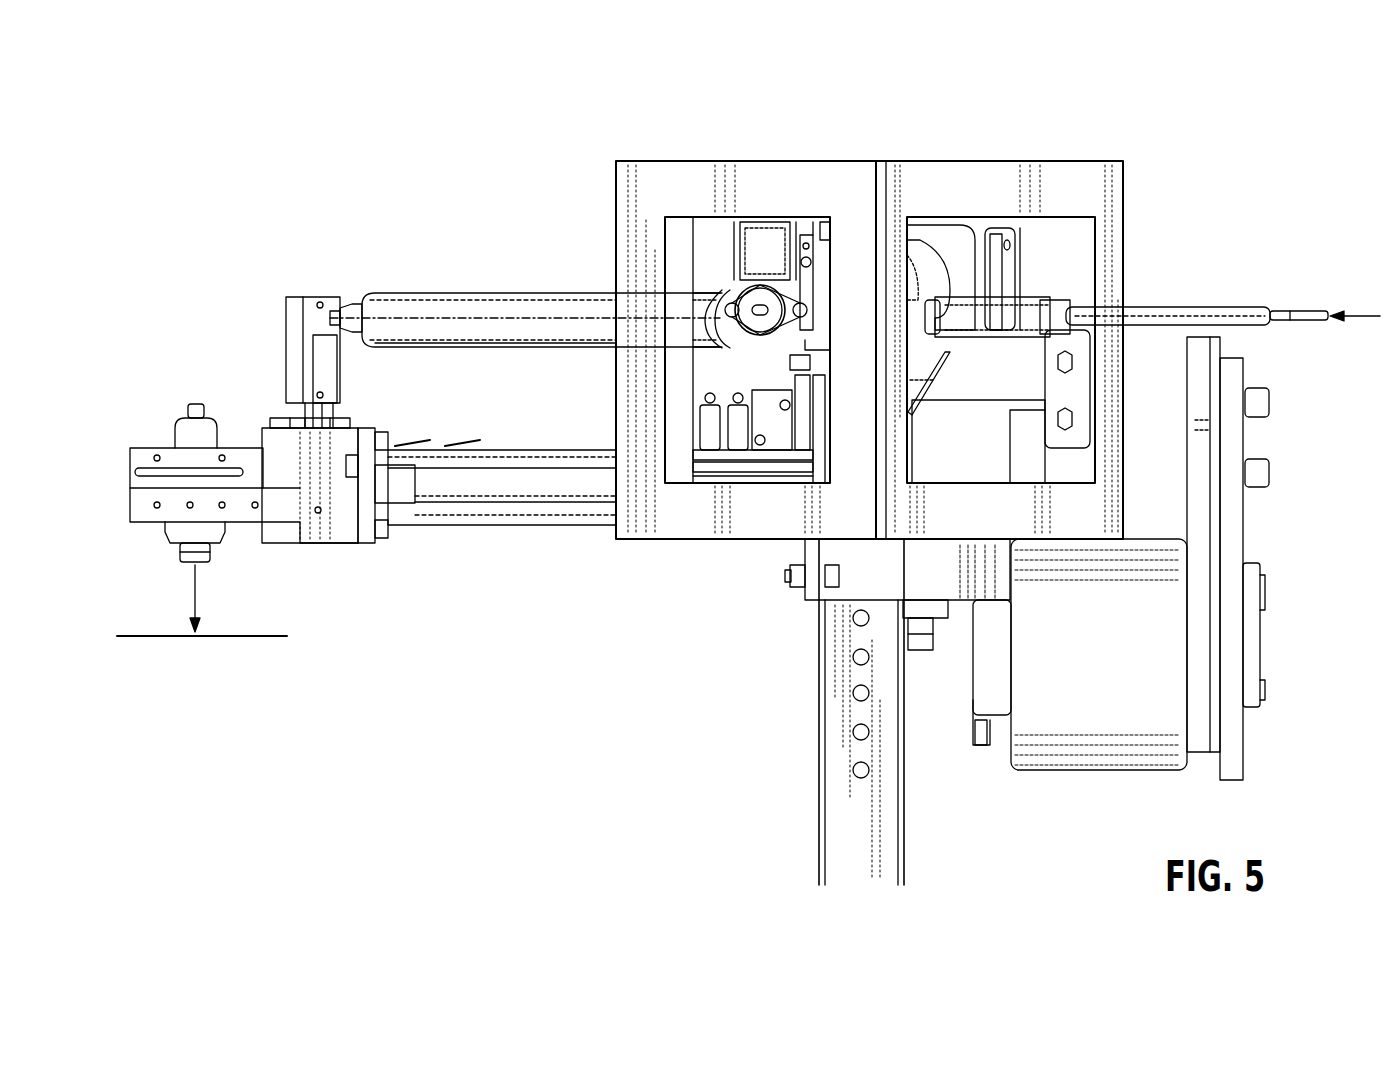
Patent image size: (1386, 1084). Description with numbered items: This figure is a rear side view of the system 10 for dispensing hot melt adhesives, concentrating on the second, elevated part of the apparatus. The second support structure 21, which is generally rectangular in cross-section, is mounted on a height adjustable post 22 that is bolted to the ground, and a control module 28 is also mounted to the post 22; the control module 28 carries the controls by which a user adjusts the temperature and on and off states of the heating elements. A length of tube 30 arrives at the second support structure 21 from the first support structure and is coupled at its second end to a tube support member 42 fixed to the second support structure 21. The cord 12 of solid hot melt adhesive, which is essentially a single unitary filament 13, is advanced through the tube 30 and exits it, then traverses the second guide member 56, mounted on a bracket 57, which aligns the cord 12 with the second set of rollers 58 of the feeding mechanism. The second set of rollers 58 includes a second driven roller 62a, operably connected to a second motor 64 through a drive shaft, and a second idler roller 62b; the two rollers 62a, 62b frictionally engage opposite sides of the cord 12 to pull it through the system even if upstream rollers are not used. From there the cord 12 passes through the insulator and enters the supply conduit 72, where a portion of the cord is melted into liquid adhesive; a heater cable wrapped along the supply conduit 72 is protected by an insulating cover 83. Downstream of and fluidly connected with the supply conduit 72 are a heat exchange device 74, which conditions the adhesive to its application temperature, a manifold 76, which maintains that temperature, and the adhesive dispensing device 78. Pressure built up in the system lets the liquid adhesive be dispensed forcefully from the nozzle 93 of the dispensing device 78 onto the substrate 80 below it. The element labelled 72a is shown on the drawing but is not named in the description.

The system 10 is at (1312, 166).
The cord 12 is at (1309, 306).
The filament 13 is at (1292, 325).
The second support structure 21 is at (616, 180).
The height adjustable post 22 is at (819, 805).
The control module 28 is at (1243, 522).
The tube 30 is at (1205, 302).
The tube support member 42 is at (1085, 272).
The second guide member 56 is at (968, 345).
The bracket 57 is at (1012, 245).
The second set of rollers 58 is at (960, 260).
The second driven roller 62a is at (922, 255).
The second idler roller 62b is at (926, 380).
The second motor 64 is at (768, 232).
The supply conduit 72 is at (457, 316).
The rod end coupling 72a is at (366, 296).
The heat exchange device 74 is at (290, 298).
The manifold 76 is at (153, 447).
The adhesive dispensing device 78 is at (163, 537).
The substrate 80 is at (150, 634).
The insulating cover 83 is at (523, 348).
The nozzle 93 is at (208, 562).